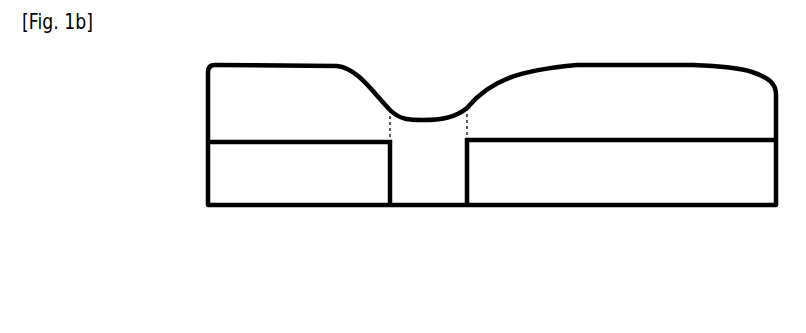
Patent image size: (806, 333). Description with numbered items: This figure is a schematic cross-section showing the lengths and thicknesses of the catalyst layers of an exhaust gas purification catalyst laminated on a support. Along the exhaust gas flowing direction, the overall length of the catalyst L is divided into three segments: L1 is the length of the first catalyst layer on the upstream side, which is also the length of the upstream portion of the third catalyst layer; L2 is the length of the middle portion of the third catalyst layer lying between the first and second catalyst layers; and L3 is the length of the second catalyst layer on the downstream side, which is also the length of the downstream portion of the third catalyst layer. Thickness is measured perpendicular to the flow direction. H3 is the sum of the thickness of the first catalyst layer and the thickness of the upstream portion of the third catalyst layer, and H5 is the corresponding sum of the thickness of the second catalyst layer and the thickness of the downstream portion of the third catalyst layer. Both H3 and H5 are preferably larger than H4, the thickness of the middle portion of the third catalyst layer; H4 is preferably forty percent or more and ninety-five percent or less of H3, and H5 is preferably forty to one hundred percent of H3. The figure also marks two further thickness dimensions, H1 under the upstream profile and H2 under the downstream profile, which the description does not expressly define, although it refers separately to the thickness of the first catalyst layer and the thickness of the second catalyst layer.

The height of left step portion H1 is at (259, 148).
The height of right step portion H2 is at (513, 146).
The sum of the thickness of the first catalyst layer and the thickness of the upstre H3 is at (235, 198).
The thickness of the middle portion of the third catalyst layer H4 is at (428, 128).
The sum of the thickness of the second catalyst layer and the thickness of the downs H5 is at (652, 198).
The length of the first catalyst layer L1 is at (382, 227).
The length of the middle portion L2 is at (459, 227).
The length of the second catalyst layer L3 is at (770, 227).
The overall length of the catalyst L is at (771, 282).